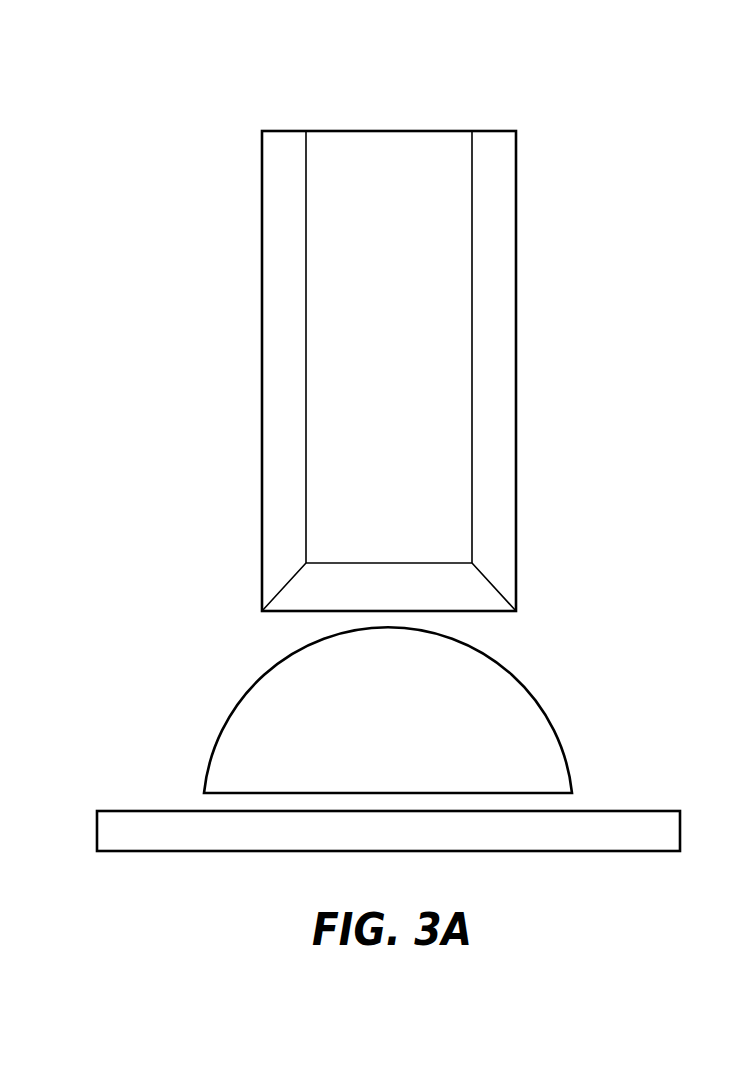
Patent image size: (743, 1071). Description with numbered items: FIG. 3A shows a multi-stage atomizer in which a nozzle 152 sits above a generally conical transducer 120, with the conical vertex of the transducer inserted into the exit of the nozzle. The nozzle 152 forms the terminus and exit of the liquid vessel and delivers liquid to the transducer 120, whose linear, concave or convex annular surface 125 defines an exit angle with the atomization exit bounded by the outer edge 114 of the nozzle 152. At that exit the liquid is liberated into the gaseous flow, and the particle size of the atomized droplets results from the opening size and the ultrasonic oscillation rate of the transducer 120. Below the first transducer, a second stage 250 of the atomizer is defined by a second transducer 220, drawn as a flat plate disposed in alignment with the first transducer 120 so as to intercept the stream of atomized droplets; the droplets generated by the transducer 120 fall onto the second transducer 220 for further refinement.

The nozzle 152 is at (516, 203).
The transducer 120 is at (388, 710).
The outer edge 114 is at (389, 696).
The annular surface 125 is at (414, 710).
The second stage 250 is at (170, 791).
The second transducer 220 is at (583, 851).